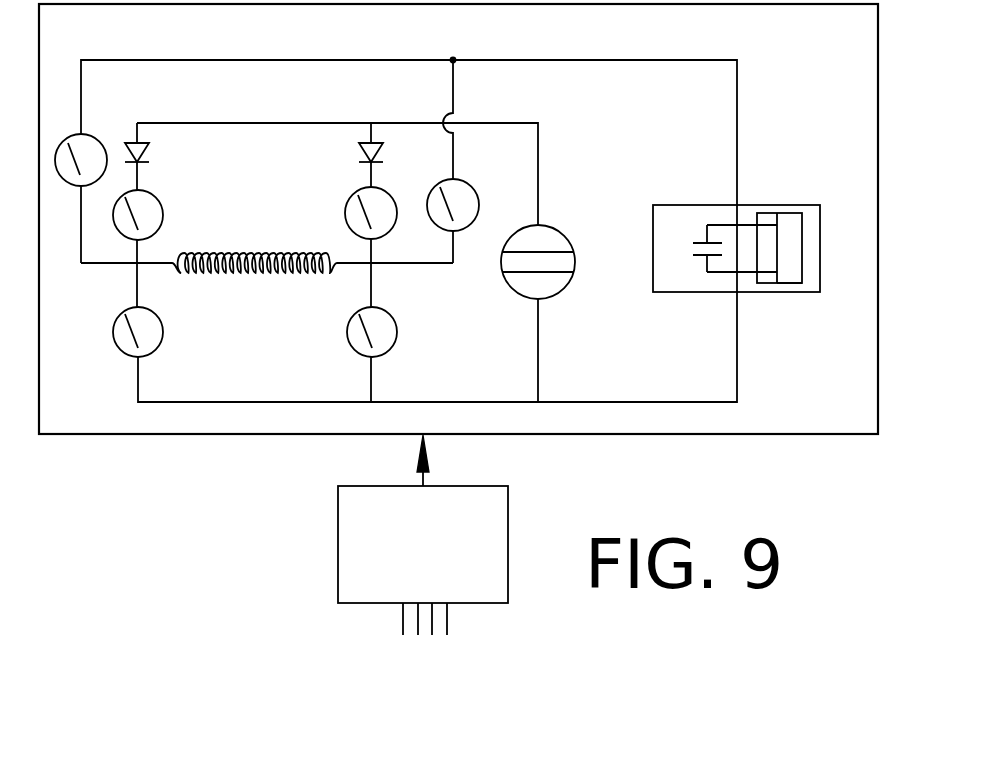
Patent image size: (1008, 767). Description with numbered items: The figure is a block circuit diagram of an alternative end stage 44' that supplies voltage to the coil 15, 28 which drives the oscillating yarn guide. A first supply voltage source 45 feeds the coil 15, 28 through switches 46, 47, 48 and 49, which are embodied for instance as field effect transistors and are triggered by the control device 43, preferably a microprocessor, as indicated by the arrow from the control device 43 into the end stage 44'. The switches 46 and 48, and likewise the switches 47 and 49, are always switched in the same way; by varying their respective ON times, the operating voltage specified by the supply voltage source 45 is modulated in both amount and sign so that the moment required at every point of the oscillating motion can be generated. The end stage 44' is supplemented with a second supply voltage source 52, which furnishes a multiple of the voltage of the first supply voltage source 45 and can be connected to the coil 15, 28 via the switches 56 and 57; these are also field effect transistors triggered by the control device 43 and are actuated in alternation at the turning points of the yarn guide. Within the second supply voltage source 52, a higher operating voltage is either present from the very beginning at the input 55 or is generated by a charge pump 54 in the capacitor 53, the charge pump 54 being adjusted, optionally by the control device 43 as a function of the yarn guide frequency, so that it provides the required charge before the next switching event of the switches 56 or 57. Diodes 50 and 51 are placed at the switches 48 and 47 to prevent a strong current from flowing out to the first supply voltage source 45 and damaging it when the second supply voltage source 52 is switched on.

The end stage 44' is at (487, 219).
The control device 43 is at (407, 553).
The supply voltage source 45 is at (513, 292).
The switch 46 is at (395, 310).
The switch 47 is at (348, 205).
The switch 48 is at (162, 200).
The switch 49 is at (163, 323).
The diode 50 is at (155, 153).
The diode 51 is at (390, 155).
The second supply voltage source 52 is at (788, 205).
The capacitor 53 is at (702, 260).
The charge pump 54 is at (767, 213).
The input 55 is at (798, 232).
The switch 56 is at (95, 135).
The switch 57 is at (473, 185).
The coil 15 is at (267, 297).
The coil 28 is at (258, 274).